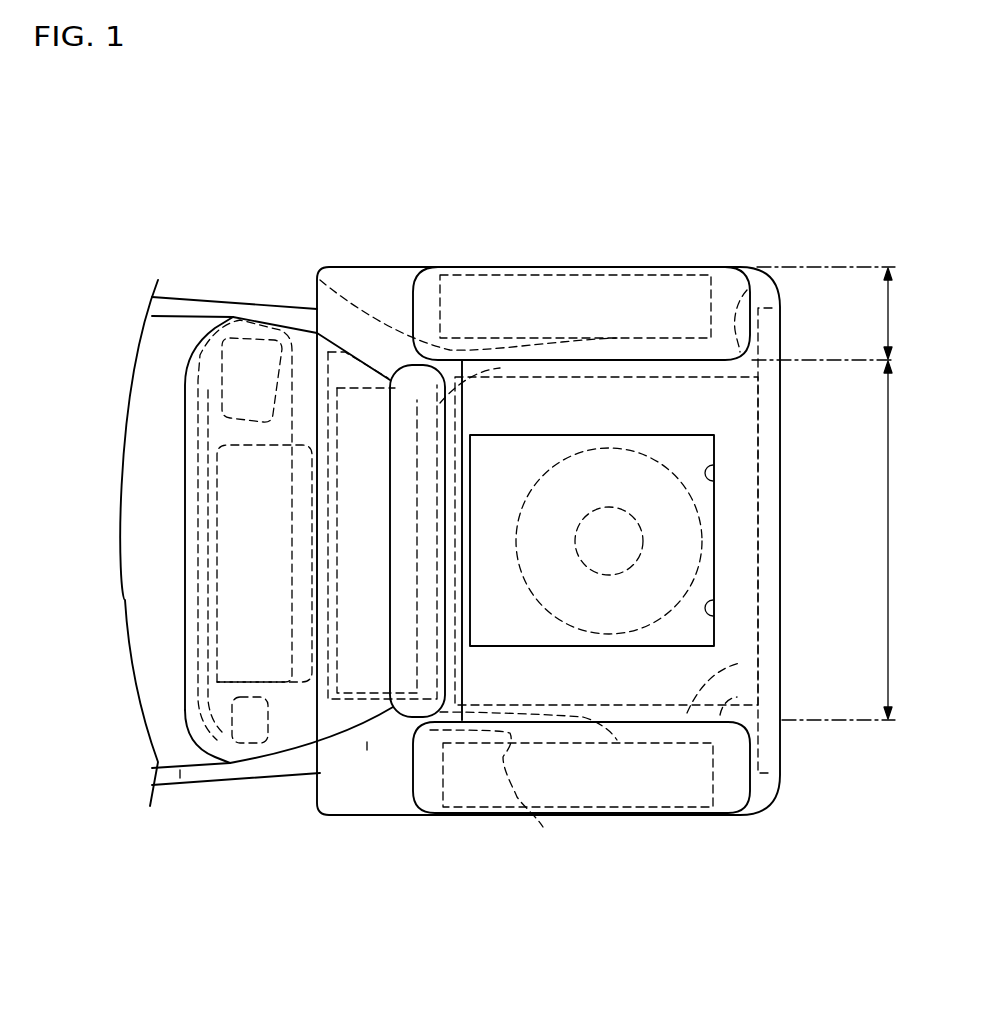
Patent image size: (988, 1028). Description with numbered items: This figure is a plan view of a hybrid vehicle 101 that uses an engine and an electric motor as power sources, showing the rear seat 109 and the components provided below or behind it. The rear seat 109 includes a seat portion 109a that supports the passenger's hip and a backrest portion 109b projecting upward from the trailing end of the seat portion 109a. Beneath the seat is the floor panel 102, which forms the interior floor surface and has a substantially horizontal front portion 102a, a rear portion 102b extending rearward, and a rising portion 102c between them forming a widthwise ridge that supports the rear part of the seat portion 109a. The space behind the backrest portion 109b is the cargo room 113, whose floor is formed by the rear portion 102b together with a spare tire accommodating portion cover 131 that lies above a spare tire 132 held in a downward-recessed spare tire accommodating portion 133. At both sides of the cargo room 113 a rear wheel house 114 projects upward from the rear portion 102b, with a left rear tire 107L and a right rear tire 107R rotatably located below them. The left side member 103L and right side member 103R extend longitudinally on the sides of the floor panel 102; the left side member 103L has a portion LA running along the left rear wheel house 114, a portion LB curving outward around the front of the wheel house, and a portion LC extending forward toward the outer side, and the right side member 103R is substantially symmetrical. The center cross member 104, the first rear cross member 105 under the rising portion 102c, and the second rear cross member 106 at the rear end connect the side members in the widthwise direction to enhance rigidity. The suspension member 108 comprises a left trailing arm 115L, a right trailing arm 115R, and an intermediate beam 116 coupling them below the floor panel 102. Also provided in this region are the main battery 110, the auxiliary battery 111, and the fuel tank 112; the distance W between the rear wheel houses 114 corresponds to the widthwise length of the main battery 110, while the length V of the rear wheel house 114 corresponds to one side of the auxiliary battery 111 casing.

The vehicle 101 is at (705, 170).
The floor panel 102 is at (167, 608).
The front portion 102a is at (173, 680).
The rear portion 102b is at (740, 518).
The rising portion 102c is at (325, 805).
The right side member 103R is at (747, 290).
The left side member 103L is at (737, 697).
The center cross member 104 is at (303, 725).
The first rear cross member 105 is at (383, 720).
The second rear cross member 106 is at (770, 453).
The right rear tire 107R is at (632, 295).
The left rear tire 107L is at (598, 785).
The suspension member 108 is at (338, 557).
The rear seat 109 is at (193, 360).
The seat portion 109a is at (193, 360).
The backrest portion 109b is at (410, 370).
The main battery 110 is at (237, 585).
The auxiliary battery 111 is at (195, 390).
The fuel tank 112 is at (365, 405).
The cargo room 113 is at (740, 480).
The rear wheel house 114 is at (722, 285).
The right trailing arm 115R is at (548, 350).
The left trailing arm 115L is at (543, 827).
The intermediate beam 116 is at (460, 477).
The spare tire accommodating portion cover 131 is at (698, 443).
The spare tire 132 is at (704, 536).
The spare tire accommodating portion 133 is at (693, 597).
The portion LA is at (740, 663).
The portion LB is at (367, 750).
The portion LC is at (180, 778).
The length V is at (828, 313).
The distance W is at (845, 540).